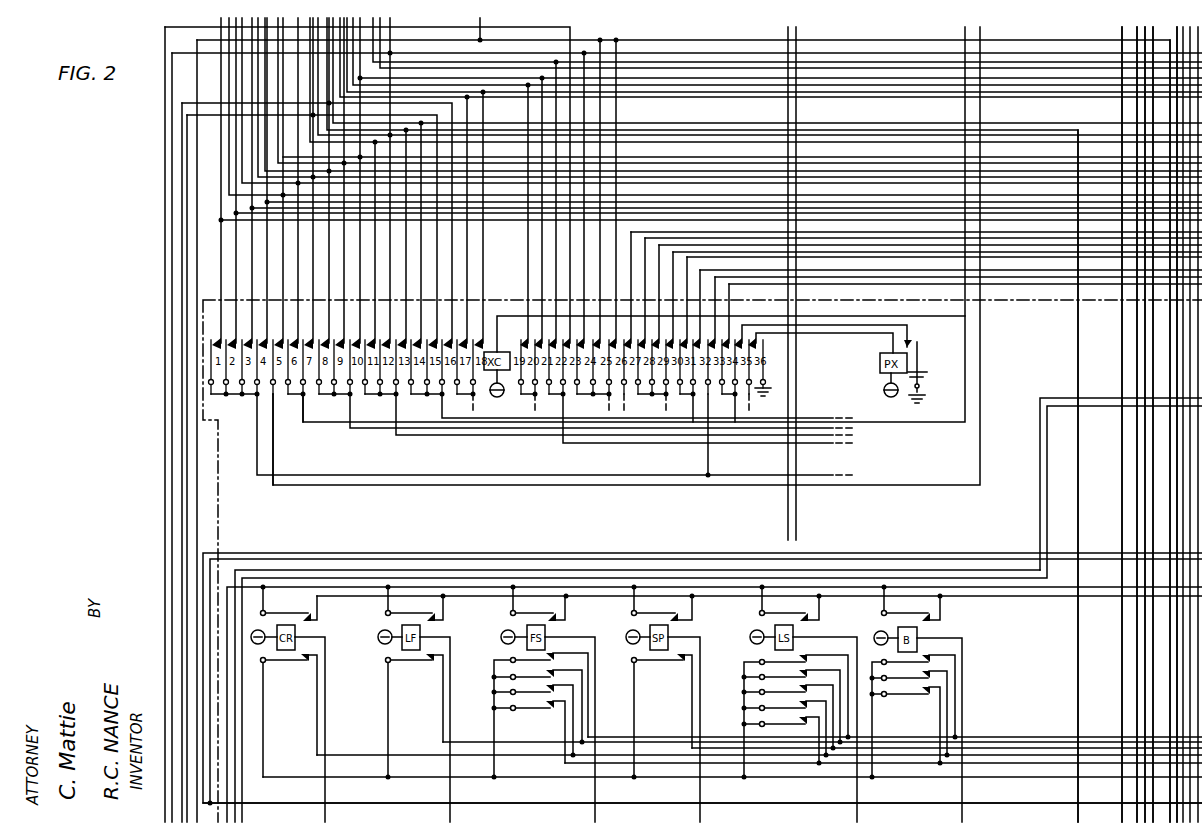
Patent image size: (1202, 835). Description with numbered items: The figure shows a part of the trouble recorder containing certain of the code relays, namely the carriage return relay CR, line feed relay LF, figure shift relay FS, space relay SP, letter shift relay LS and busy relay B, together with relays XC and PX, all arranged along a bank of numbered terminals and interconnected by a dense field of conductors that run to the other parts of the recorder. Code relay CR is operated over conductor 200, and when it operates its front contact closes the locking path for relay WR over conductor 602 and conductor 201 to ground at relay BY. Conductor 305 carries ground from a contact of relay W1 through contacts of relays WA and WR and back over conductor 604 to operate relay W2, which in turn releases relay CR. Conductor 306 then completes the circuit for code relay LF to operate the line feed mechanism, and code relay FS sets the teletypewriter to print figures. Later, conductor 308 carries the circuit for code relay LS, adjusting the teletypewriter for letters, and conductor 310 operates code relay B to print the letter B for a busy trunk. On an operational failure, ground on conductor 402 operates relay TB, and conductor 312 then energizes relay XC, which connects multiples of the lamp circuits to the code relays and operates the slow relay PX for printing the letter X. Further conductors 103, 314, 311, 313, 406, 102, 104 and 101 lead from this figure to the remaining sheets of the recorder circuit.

The cable conductors 103 is at (572, 25).
The conductor 314 is at (803, 539).
The conductor 402 is at (1013, 806).
The conductor 604 is at (943, 578).
The conductor 201 is at (972, 598).
The conductor 602 is at (1020, 598).
The conductor 305 is at (238, 792).
The conductor 200 is at (327, 792).
The conductor 306 is at (450, 797).
The conductor 308 is at (858, 795).
The conductor 310 is at (966, 793).
The conductor 311 is at (1118, 338).
The conductor 313 is at (1143, 357).
The conductor 406 is at (1170, 376).
The conductor 102 is at (1132, 430).
The conductor 104 is at (1177, 455).
The conductor 101 is at (1150, 481).
The conductor 312 is at (1122, 506).